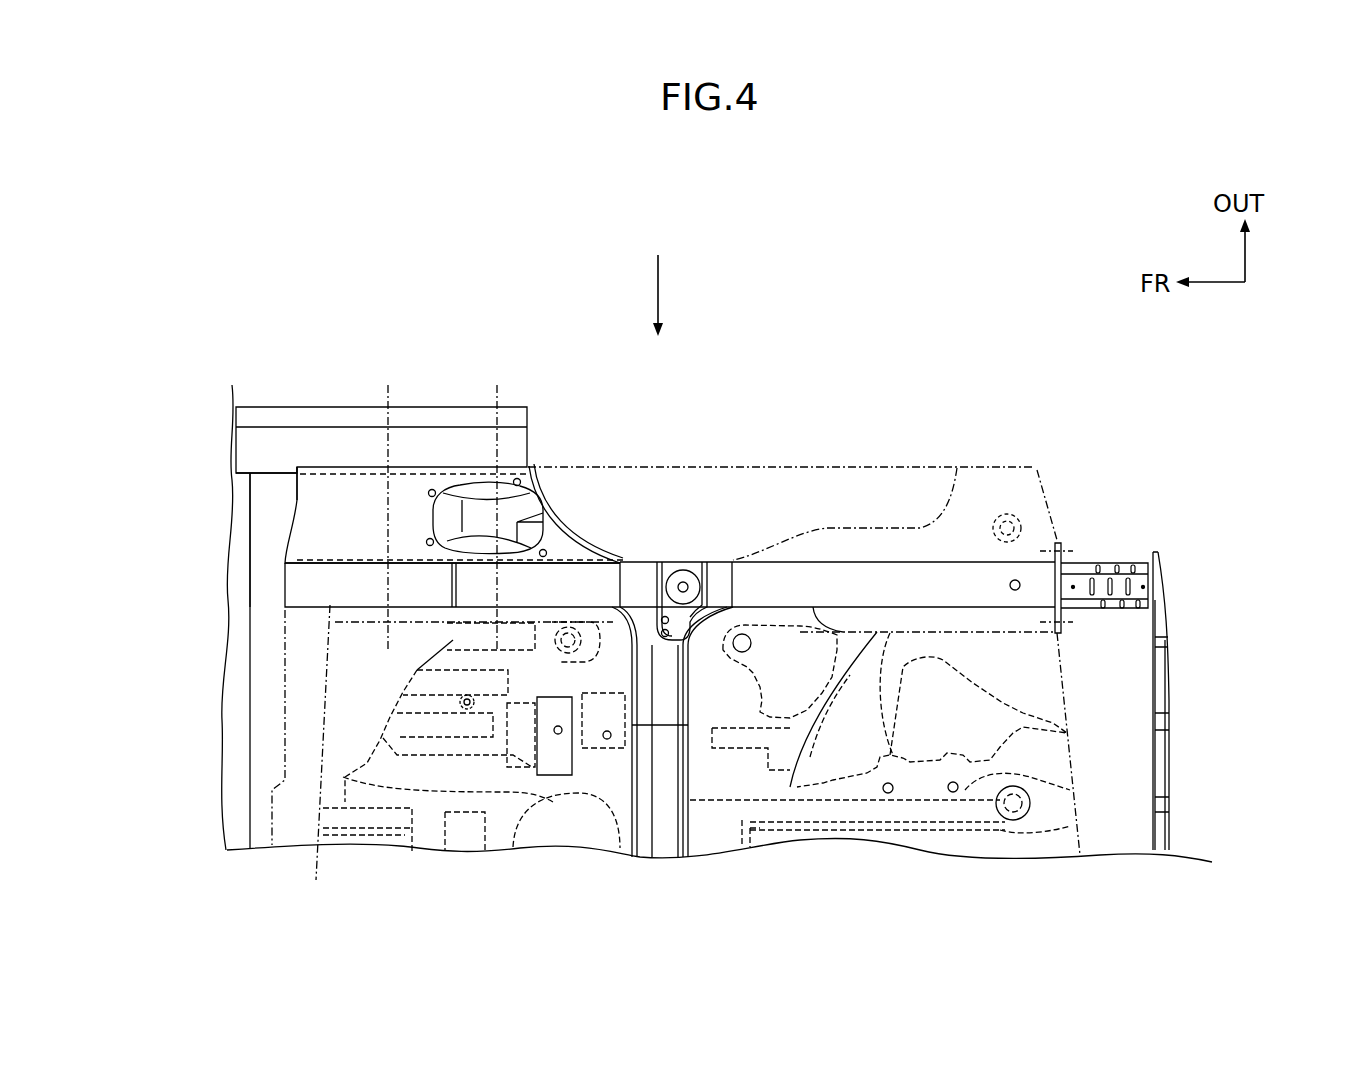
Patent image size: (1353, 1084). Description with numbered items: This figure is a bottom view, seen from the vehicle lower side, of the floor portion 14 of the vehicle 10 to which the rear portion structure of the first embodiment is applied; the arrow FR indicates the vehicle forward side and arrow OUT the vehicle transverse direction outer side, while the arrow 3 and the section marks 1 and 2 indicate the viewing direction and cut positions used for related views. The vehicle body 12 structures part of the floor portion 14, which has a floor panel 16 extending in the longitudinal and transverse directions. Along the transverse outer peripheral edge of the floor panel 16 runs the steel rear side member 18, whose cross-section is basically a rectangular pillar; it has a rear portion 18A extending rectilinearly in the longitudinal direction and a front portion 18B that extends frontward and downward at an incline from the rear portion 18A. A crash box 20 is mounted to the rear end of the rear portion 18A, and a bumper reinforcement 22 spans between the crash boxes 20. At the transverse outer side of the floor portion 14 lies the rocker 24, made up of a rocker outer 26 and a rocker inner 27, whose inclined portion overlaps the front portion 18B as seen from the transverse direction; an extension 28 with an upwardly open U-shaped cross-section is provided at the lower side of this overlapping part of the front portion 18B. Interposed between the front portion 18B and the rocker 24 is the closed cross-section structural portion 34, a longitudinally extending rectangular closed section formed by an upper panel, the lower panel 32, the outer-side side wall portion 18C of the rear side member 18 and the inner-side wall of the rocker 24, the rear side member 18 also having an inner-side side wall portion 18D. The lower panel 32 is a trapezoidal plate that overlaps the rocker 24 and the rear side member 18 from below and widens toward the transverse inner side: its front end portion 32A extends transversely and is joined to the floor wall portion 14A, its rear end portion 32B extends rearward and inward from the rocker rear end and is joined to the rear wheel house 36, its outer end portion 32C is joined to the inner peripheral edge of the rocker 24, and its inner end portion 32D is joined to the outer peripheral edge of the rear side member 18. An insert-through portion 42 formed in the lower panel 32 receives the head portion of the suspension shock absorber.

The section line 1 is at (380, 393).
The section line 2 is at (489, 393).
The arrow direction 3 is at (658, 298).
The vehicle 10 is at (759, 497).
The vehicle body 12 is at (795, 382).
The floor portion 14 is at (932, 420).
The floor wall portion 14A is at (236, 642).
The floor panel 16 is at (316, 880).
The rear side member 18 is at (961, 548).
The rear portion 18A is at (825, 585).
The front portion 18B is at (563, 587).
The outer-side side wall portion 18C is at (800, 562).
The inner-side side wall portion 18D is at (872, 633).
The crash box 20 is at (1110, 563).
The bumper reinforcement 22 is at (1173, 644).
The rocker 24 is at (312, 364).
The rocker outer 26 is at (247, 417).
The rocker inner 27 is at (238, 452).
The extension 28 is at (305, 580).
The lower panel 32 is at (422, 490).
The end portion 32A is at (290, 525).
The end portion 32B is at (555, 538).
The end portion 32C is at (305, 465).
The end portion 32D is at (363, 566).
The closed cross-section structural portion 34 is at (210, 516).
The rear wheel house 36 is at (553, 463).
The insert-through portion 42 is at (437, 500).